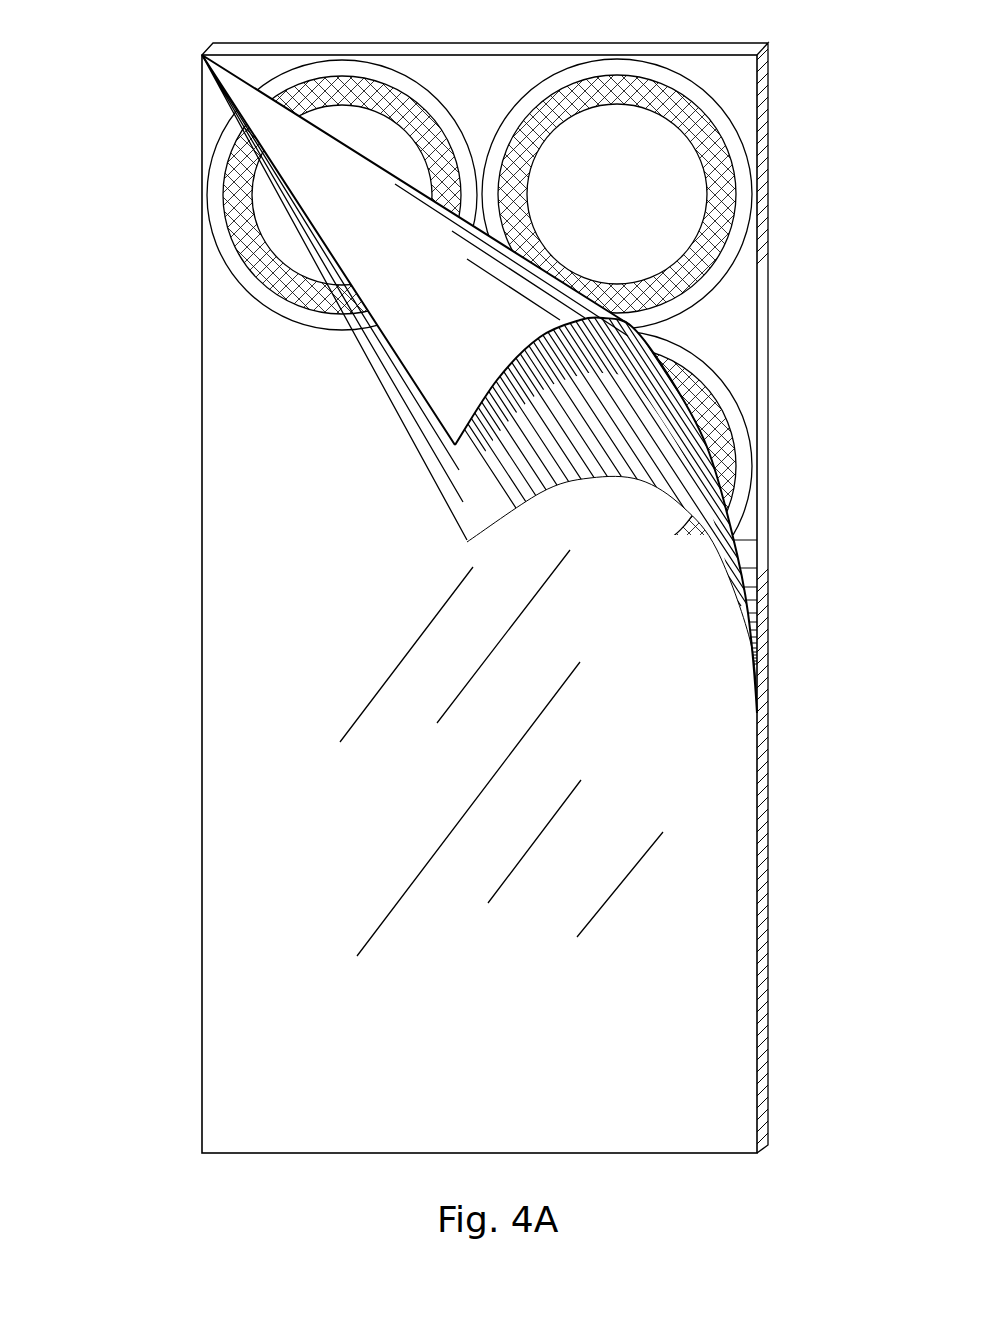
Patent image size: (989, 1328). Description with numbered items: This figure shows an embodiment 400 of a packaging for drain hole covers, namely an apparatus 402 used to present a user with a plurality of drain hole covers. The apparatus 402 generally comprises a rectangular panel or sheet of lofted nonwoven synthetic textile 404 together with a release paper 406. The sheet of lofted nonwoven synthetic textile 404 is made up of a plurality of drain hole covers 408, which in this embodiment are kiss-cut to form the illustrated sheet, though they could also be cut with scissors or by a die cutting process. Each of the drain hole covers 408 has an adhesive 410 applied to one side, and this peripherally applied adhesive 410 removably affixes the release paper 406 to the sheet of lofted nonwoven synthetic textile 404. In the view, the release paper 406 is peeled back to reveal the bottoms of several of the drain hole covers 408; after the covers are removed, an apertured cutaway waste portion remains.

The embodiment 400 is at (150, 68).
The apparatus 402 is at (188, 548).
The sheet of lofted nonwoven synthetic textile 404 is at (505, 100).
The release paper 406 is at (408, 560).
The drain hole covers 408 is at (405, 155).
The adhesive 410 is at (718, 180).